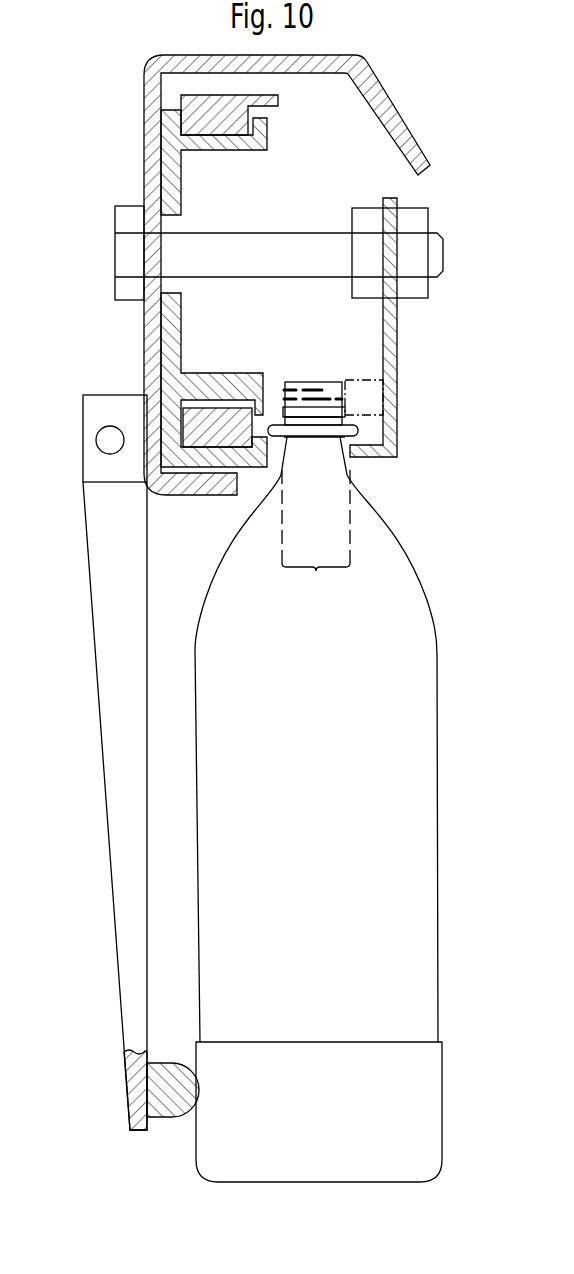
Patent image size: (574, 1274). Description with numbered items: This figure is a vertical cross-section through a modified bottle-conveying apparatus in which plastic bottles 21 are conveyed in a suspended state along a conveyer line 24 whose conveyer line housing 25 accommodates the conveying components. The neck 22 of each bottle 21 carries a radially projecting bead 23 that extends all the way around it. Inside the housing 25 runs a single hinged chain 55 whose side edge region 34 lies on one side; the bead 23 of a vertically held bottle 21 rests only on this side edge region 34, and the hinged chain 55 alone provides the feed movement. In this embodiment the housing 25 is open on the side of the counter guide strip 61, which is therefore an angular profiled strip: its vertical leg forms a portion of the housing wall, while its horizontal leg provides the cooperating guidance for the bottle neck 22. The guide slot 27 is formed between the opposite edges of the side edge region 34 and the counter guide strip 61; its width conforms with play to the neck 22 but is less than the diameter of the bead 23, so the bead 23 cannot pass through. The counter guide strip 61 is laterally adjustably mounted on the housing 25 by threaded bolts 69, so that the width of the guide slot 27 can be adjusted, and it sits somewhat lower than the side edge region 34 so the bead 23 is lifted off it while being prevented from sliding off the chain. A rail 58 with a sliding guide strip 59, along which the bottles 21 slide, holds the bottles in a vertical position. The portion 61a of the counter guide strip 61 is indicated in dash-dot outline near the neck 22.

The bottle 21 is at (415, 748).
The bottle neck 22 is at (313, 458).
The bead 23 is at (358, 427).
The conveyer line 24 is at (103, 222).
The conveyer line housing 25 is at (155, 121).
The guide slot 27 is at (316, 533).
The side edge region 34 is at (265, 443).
The hinged chain 55 is at (210, 420).
The rail 58 is at (102, 787).
The sliding guide strip 59 is at (173, 1088).
The counter guide strip 61 is at (395, 346).
The plate portion 61a is at (365, 398).
The threaded bolts 69 is at (323, 261).